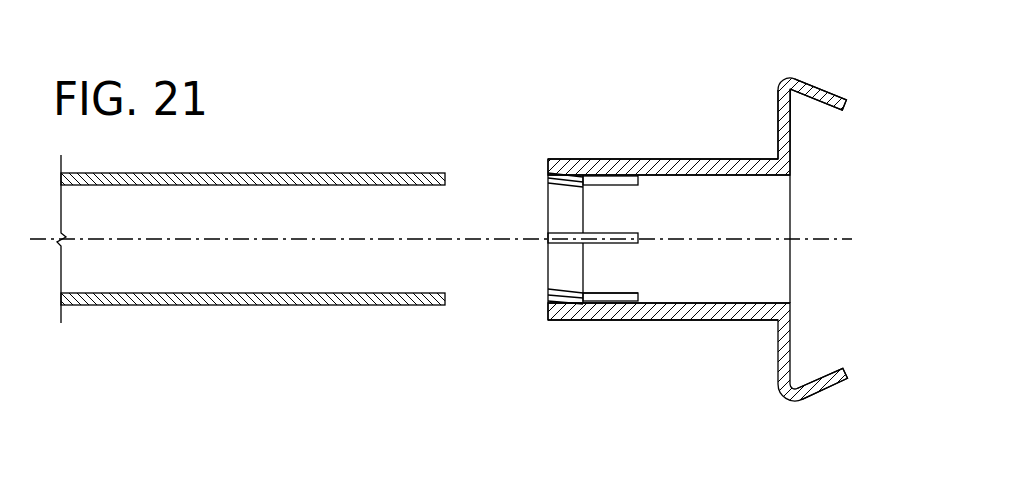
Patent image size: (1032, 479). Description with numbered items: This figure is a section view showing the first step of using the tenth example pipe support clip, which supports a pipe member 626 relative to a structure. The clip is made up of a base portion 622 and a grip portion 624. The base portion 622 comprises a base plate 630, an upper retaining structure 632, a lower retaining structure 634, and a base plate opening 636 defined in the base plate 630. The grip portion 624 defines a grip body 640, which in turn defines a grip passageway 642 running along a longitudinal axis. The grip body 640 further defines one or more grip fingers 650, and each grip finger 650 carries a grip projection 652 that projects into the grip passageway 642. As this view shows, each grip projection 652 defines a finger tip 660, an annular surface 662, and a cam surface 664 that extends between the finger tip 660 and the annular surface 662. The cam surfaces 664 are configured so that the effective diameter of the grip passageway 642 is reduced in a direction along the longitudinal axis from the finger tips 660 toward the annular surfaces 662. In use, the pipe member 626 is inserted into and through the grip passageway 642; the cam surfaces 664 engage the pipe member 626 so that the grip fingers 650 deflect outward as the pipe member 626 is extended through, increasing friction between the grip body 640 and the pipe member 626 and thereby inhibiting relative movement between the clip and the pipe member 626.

The base portion 622 is at (778, 85).
The grip portion 624 is at (704, 321).
The pipe member 626 is at (318, 173).
The base plate 630 is at (790, 128).
The upper retaining structure 632 is at (838, 92).
The lower retaining structure 634 is at (814, 396).
The base plate opening 636 is at (780, 218).
The grip body 640 is at (698, 160).
The grip passageway 642 is at (746, 225).
The grip fingers 650 is at (612, 208).
The grip projection 652 is at (560, 262).
The finger tip 660 is at (548, 161).
The annular surface 662 is at (585, 301).
The cam surface 664 is at (548, 191).